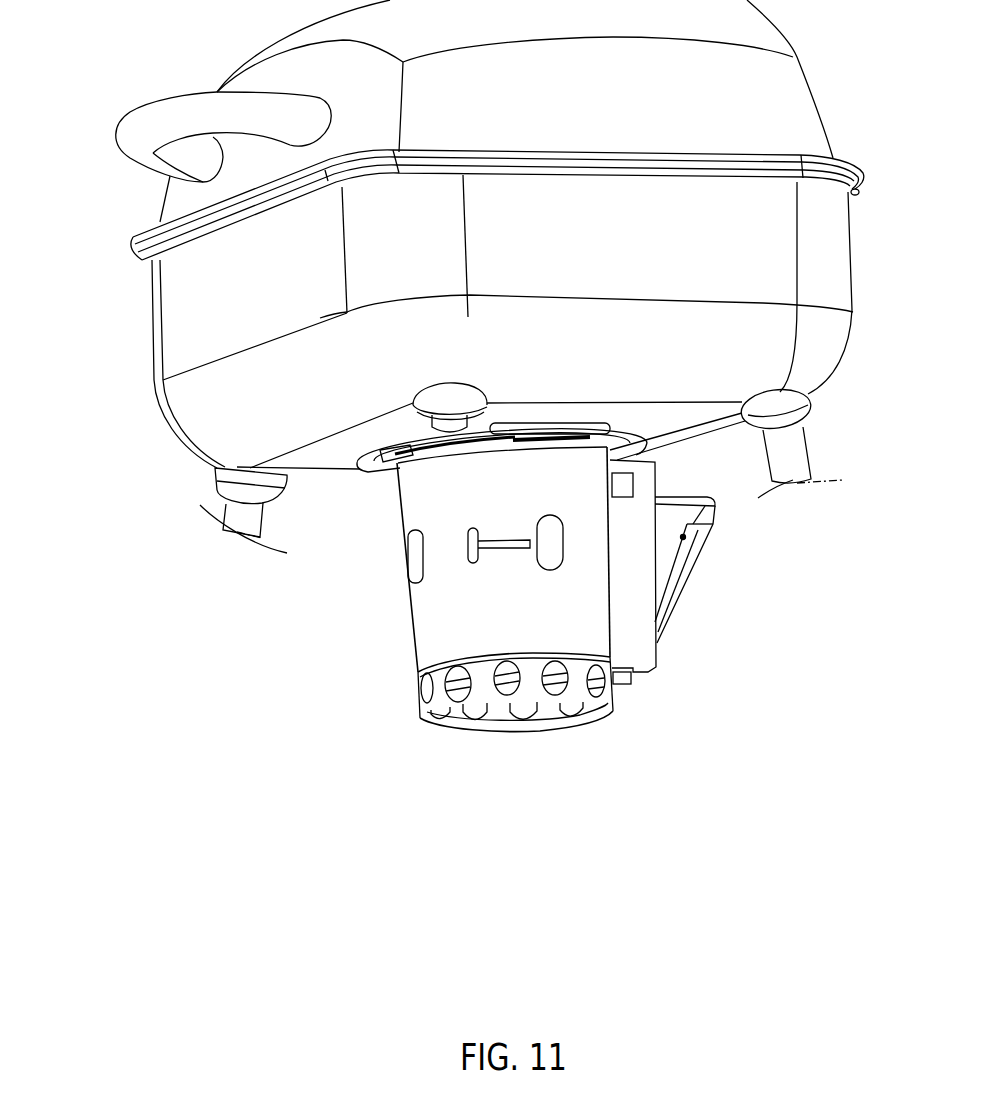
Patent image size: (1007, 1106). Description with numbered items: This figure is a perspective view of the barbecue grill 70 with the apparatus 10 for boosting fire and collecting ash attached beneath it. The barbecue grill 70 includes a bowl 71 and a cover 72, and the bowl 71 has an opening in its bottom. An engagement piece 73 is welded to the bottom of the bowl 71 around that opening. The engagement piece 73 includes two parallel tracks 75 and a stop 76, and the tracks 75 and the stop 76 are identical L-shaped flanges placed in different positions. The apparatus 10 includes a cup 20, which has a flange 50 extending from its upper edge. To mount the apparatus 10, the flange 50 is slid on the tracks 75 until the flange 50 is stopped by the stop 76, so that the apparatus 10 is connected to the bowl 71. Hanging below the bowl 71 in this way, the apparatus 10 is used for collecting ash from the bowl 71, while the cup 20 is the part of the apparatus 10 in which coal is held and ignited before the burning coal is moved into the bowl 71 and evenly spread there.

The apparatus 10 is at (428, 742).
The cup 20 is at (410, 630).
The flange 50 is at (390, 470).
The barbecue grill 70 is at (70, 198).
The bowl 71 is at (180, 327).
The cover 72 is at (180, 203).
The engagement piece 73 is at (360, 472).
The tracks 75 is at (570, 437).
The stop 76 is at (387, 447).